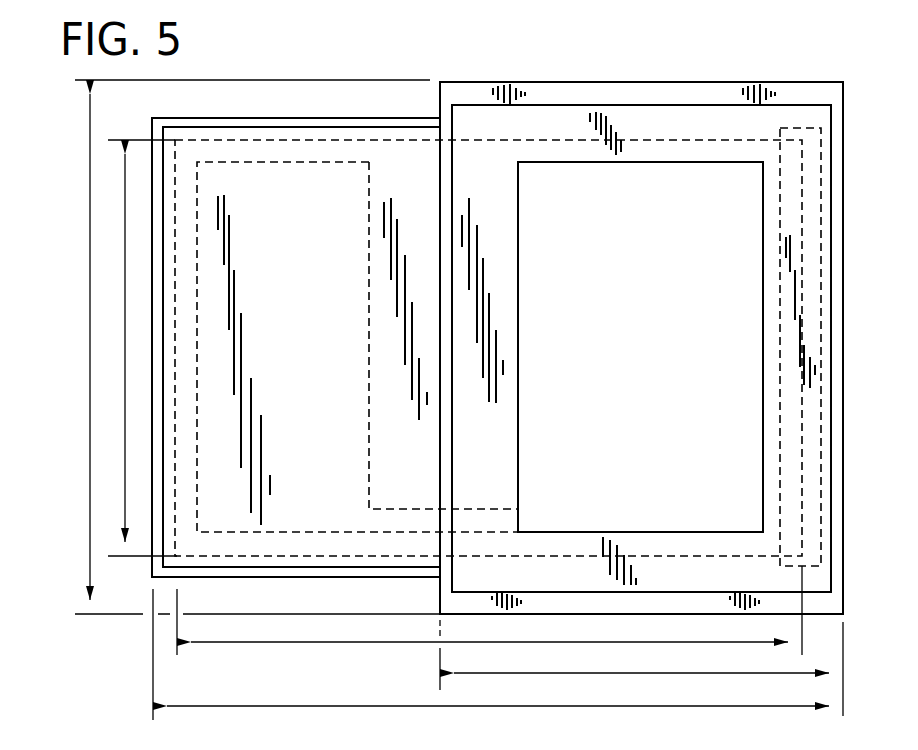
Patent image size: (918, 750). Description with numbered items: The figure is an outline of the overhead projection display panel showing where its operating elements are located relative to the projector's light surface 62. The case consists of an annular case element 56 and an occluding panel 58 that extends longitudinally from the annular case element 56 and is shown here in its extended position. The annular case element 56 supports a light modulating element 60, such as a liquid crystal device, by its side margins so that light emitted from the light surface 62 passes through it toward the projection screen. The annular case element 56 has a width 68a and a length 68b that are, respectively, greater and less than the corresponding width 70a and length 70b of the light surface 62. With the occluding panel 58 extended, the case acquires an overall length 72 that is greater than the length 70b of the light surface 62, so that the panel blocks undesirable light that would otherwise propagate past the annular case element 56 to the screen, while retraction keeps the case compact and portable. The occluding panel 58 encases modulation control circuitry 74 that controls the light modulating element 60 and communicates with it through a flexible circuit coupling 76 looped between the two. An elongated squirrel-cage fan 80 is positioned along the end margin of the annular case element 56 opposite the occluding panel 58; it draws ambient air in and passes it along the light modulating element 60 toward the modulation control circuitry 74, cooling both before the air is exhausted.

The annular case element 56 is at (845, 122).
The occluding panel 58 is at (183, 118).
The light modulating element 60 is at (657, 329).
The light surface 62 is at (397, 140).
The width 68a is at (90, 267).
The length 68b is at (660, 673).
The width 70a is at (125, 300).
The length 70b is at (340, 643).
The length 72 is at (558, 706).
The modulation control circuitry 74 is at (248, 162).
The flexible circuit coupling 76 is at (462, 507).
The squirrel-cage fan 80 is at (793, 130).